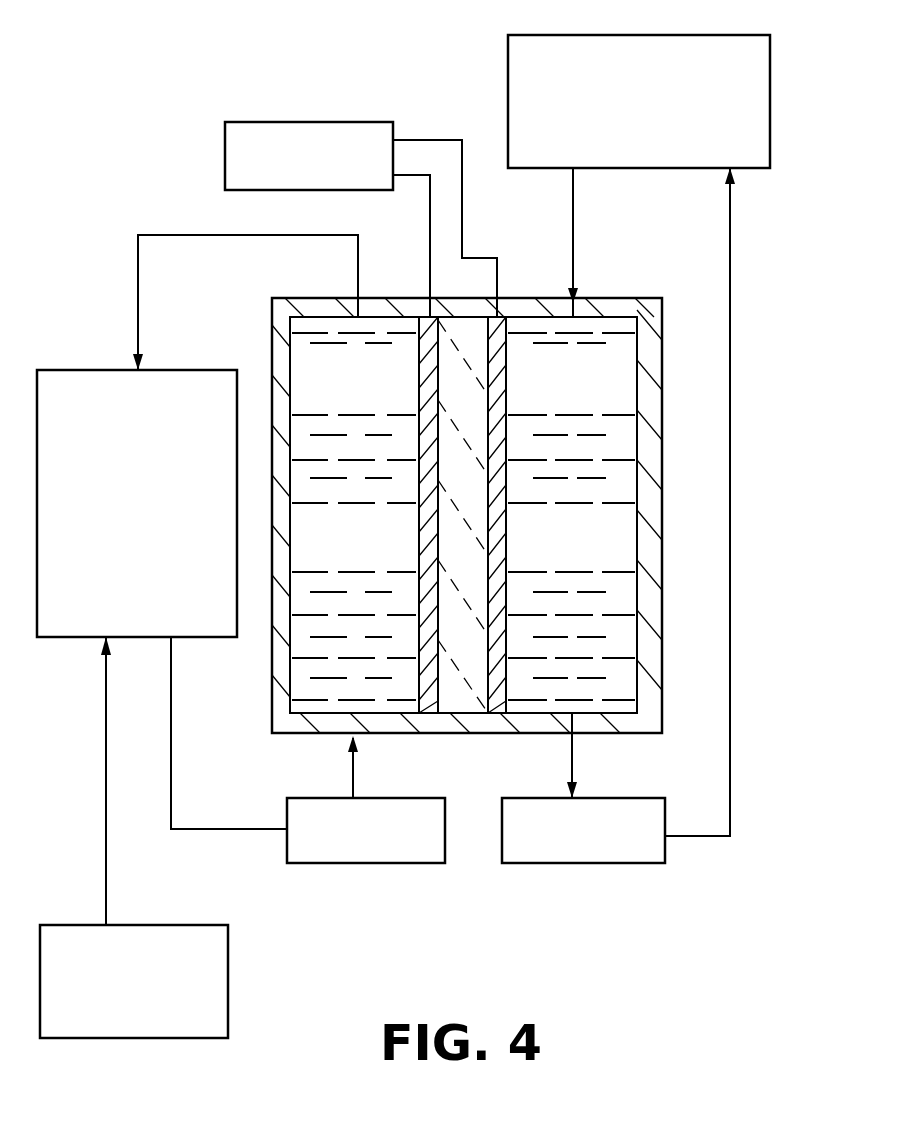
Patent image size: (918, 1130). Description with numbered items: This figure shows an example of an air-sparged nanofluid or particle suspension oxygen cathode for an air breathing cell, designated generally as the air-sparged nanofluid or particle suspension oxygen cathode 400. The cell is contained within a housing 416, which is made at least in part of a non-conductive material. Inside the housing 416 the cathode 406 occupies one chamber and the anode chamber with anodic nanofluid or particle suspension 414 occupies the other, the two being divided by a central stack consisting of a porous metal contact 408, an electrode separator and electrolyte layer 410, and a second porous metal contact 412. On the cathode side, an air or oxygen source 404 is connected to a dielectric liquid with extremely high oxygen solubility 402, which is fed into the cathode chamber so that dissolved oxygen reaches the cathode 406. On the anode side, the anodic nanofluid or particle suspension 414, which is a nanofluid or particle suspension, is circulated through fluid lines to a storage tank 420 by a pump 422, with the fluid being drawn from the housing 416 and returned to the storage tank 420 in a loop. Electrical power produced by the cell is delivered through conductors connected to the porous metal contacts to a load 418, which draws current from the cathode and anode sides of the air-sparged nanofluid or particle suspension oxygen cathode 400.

The air-sparged nanofluid or particle suspension oxygen cathode for air breathing ce 400 is at (250, 34).
The dielectric liquid with extremely high oxygen solubility 402 is at (97, 370).
The air or oxygen source 404 is at (228, 980).
The cathode 406 is at (385, 392).
The porous metal contact 408 is at (419, 536).
The electrode separator and electrolyte layer 410 is at (464, 672).
The porous metal contact 412 is at (506, 560).
The anode chamber with anodic nanofluid or particle suspension 414 is at (598, 387).
The housing 416 is at (612, 298).
The load 418 is at (316, 122).
The storage tank 420 is at (508, 63).
The pump 422 is at (395, 865).